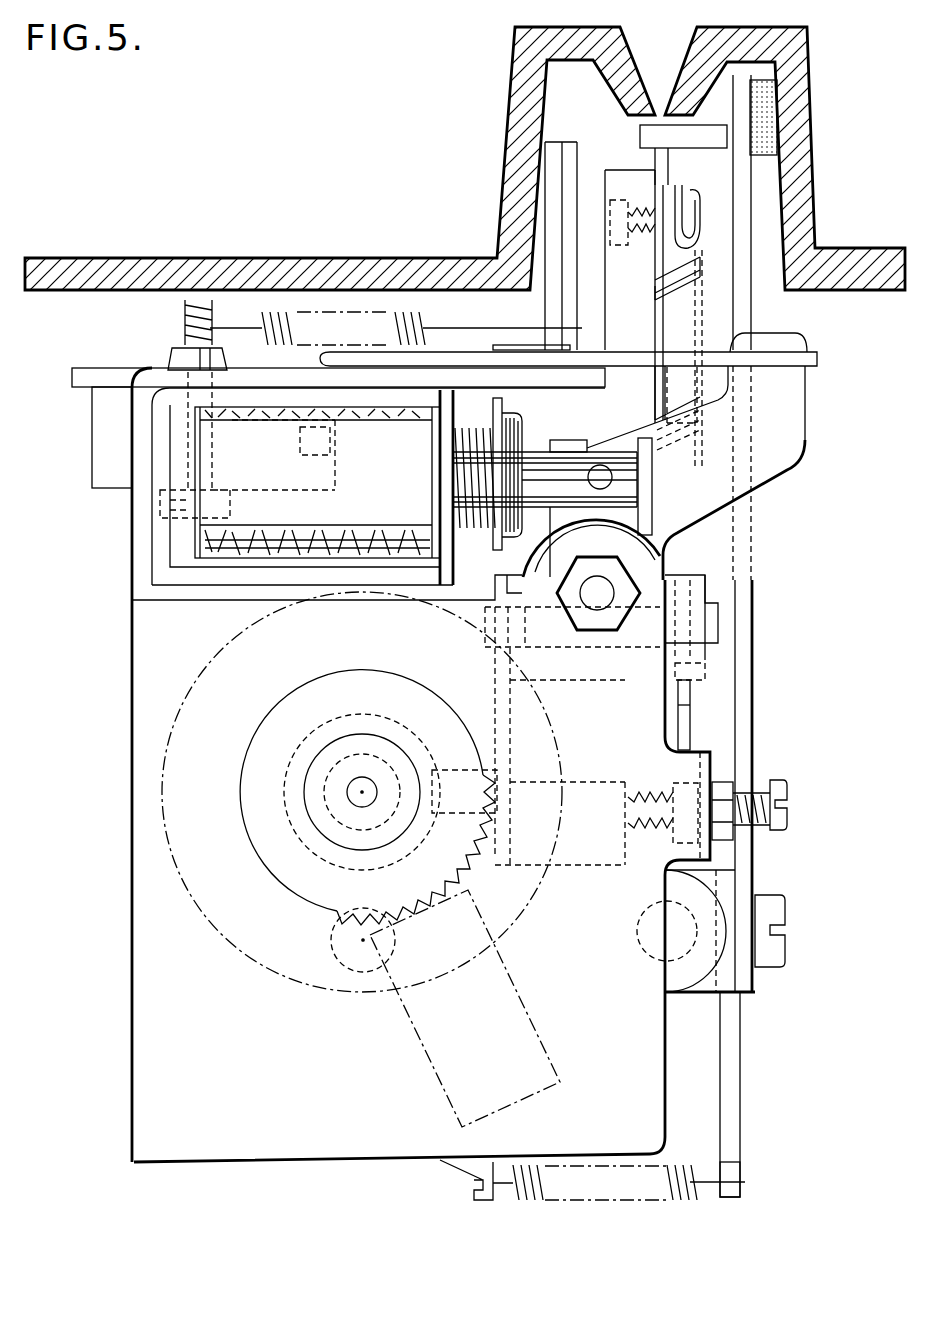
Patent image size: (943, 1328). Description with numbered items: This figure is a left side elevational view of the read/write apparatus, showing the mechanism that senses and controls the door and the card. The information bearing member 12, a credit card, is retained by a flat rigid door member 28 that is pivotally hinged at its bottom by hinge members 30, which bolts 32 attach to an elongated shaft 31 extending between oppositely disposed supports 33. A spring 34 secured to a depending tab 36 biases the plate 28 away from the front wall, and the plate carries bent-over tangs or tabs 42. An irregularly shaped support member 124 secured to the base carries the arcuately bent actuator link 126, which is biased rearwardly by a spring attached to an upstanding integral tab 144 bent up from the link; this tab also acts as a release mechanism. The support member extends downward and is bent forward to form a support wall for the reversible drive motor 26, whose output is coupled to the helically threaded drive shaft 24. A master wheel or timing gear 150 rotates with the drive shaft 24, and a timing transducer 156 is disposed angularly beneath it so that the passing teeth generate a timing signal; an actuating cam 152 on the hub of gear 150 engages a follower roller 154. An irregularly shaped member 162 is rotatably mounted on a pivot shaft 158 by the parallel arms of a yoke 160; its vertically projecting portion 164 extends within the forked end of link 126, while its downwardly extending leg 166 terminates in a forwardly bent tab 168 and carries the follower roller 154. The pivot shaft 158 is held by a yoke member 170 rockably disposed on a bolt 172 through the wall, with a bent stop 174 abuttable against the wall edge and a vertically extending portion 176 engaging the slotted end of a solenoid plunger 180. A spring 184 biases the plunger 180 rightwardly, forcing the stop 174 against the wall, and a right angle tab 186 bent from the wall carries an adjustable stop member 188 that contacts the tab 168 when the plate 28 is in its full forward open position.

The information bearing member 12 is at (655, 160).
The helically threaded drive shaft 24 is at (350, 797).
The reversible D.C. drive motor 26 is at (203, 907).
The door member 28 is at (747, 872).
The hinge members 30 is at (737, 990).
The elongated shaft 31 is at (637, 935).
The bolts 32 is at (775, 947).
The supports 33 is at (697, 993).
The spring 34 is at (540, 1202).
The depending tab 36 is at (728, 1125).
The tangs or tabs 42 is at (687, 140).
The support member 124 is at (285, 1105).
The actuator link 126 is at (818, 358).
The upstanding integral tab 144 is at (575, 160).
The master wheel or timing gear 150 is at (307, 697).
The actuating cam 152 is at (410, 733).
The follower roller 154 is at (487, 787).
The timing solenoid or transducer 156 is at (430, 1060).
The pivot shaft 158 is at (713, 618).
The yoke 160 is at (720, 473).
The irregularly shaped member 162 is at (792, 438).
The vertically projecting portion 164 is at (805, 338).
The downwardly extending leg 166 is at (497, 742).
The forwardly bent tab 168 is at (648, 797).
The yoke member 170 is at (705, 667).
The bolt 172 is at (590, 592).
The stop 174 is at (680, 727).
The vertically extending integral portion 176 is at (550, 490).
The plunger 180 is at (523, 480).
The spring 184 is at (473, 440).
The right angle tab 186 is at (710, 770).
The adjustable stop member 188 is at (785, 790).